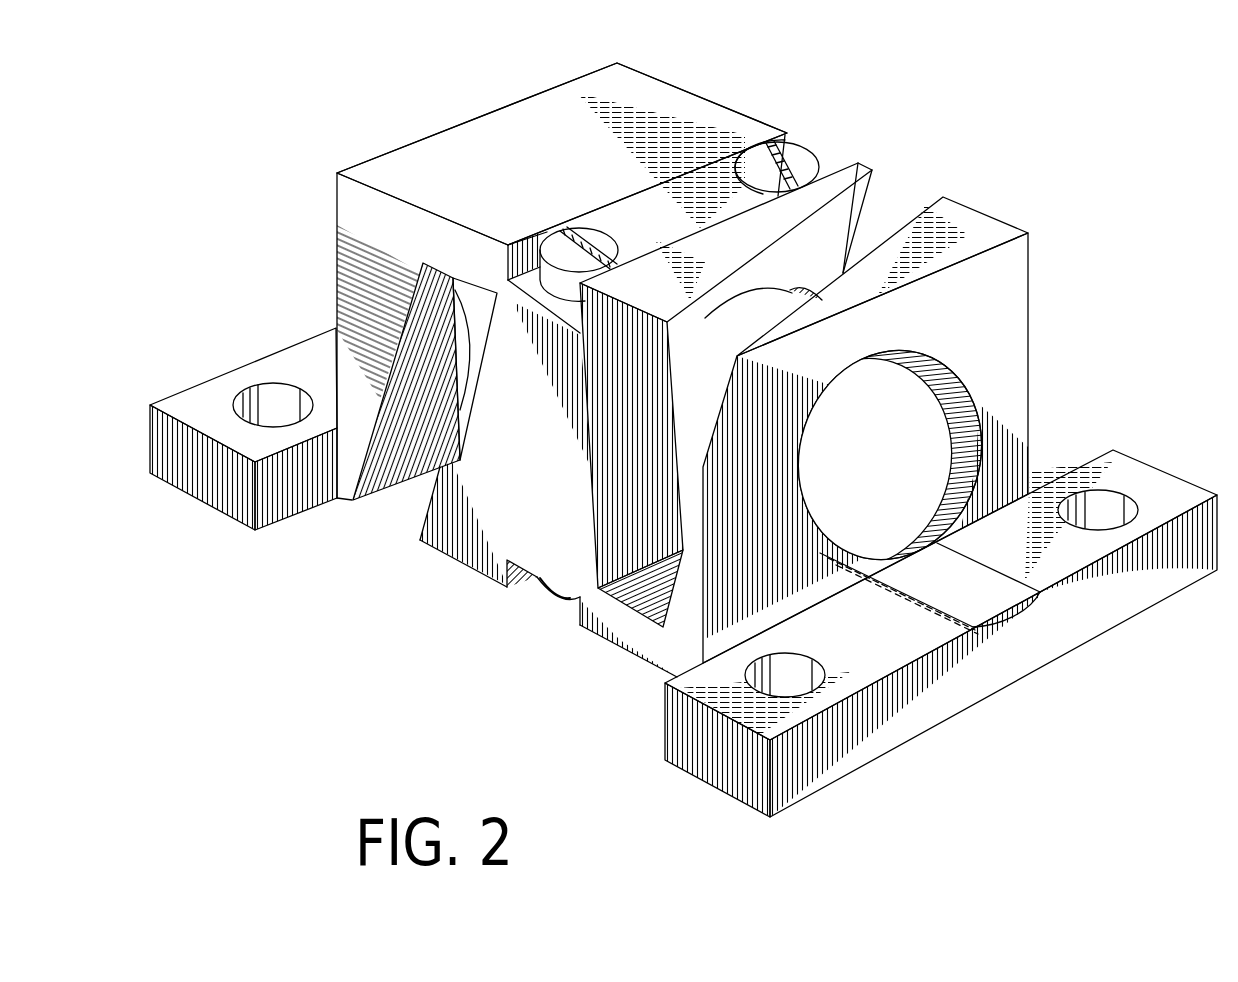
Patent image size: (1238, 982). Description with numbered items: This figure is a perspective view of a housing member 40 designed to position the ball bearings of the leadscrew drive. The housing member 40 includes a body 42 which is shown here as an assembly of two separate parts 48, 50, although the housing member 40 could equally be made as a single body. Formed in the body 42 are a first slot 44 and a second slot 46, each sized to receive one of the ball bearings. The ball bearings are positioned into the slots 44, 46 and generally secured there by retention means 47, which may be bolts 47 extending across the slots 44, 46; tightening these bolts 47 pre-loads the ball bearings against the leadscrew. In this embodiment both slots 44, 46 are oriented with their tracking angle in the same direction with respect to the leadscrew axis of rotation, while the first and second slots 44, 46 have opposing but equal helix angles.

The housing member 40 is at (718, 90).
The body 42 is at (547, 189).
The first slot 44 is at (406, 495).
The second slot 46 is at (880, 206).
The retention means 47 is at (561, 250).
The first part 48 is at (401, 164).
The second part 50 is at (1010, 283).